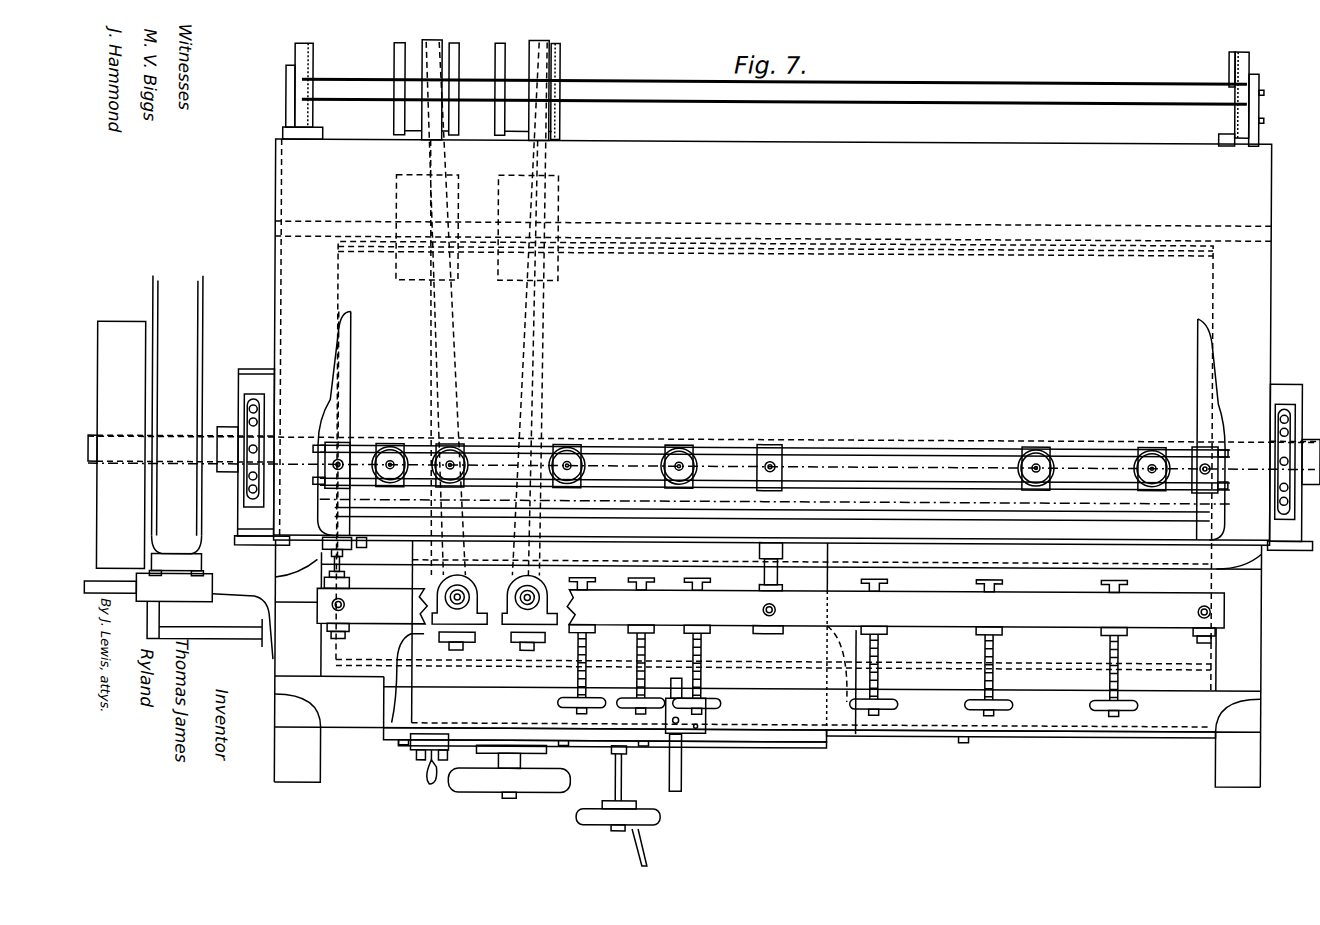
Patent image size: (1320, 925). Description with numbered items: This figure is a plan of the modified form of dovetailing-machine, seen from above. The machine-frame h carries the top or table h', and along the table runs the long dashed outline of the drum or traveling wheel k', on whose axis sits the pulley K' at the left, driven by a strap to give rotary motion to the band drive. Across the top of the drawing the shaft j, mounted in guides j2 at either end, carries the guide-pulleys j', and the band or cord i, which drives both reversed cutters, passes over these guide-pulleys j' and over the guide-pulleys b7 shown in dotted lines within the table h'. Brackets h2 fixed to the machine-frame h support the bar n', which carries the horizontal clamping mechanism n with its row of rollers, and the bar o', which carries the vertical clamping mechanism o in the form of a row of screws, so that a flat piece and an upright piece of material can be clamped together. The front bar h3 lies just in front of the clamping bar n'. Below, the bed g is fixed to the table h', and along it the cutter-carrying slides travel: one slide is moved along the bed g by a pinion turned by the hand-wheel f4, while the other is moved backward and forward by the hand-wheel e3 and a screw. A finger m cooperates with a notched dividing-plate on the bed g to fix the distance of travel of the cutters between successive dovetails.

The shaft j is at (761, 70).
The guide-pulleys j' is at (425, 87).
The guides j2 is at (1240, 113).
The band or cord i is at (477, 300).
The top or table h' is at (773, 342).
The pulley k' is at (774, 452).
The guide-pulleys b7 is at (395, 188).
The brackets h2 is at (771, 437).
The horizontal clamping mechanism n is at (701, 456).
The bar n' is at (775, 466).
The front bar h3 is at (772, 521).
The bar o' is at (771, 591).
The vertical clamping mechanism o is at (848, 647).
The bed g is at (767, 663).
The machine-frame h is at (767, 740).
The spring-finger m is at (436, 782).
The hand-wheel f4 is at (509, 779).
The hand-wheel e3 is at (627, 806).
The pulley K' is at (702, 469).